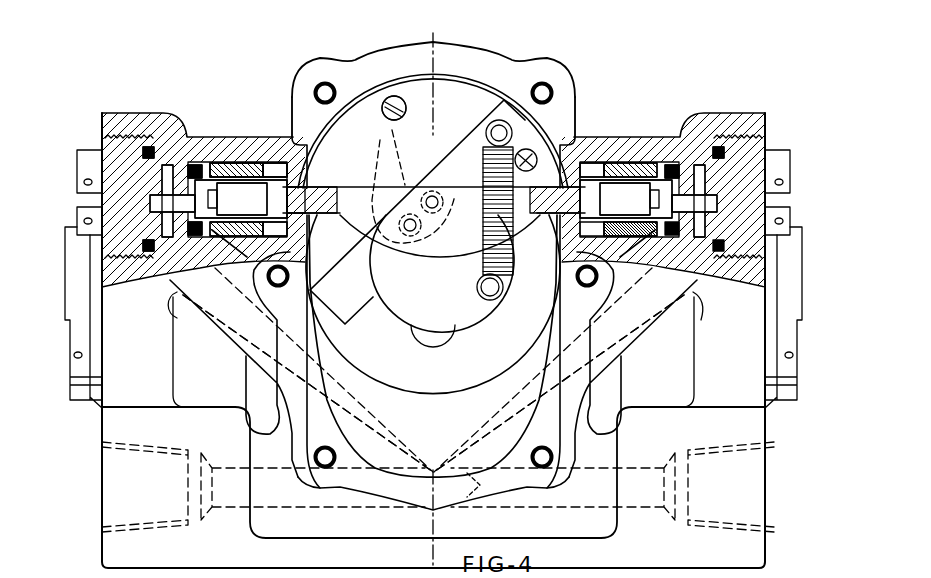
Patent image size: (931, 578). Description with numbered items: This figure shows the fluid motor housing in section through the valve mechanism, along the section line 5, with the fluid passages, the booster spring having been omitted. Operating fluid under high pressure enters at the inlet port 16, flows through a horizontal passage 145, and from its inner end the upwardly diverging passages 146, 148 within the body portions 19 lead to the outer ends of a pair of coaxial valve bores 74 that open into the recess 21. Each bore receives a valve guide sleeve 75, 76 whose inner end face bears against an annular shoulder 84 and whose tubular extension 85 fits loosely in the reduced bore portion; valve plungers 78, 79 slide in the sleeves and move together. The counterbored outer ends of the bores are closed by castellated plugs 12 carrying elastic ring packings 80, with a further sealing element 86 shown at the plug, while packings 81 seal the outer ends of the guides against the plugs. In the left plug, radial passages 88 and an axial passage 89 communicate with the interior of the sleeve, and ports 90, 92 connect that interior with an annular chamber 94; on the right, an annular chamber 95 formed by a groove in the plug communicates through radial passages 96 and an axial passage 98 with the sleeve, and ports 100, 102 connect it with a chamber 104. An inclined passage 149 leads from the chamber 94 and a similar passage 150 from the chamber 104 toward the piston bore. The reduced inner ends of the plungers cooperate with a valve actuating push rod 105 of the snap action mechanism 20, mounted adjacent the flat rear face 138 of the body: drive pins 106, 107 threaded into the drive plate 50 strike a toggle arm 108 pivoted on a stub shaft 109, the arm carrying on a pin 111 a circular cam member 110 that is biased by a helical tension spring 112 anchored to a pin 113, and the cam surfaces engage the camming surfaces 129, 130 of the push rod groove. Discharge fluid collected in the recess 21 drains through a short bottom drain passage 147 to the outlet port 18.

The castellated plug 12 is at (85, 158).
The elastic ring packing 80 is at (148, 147).
The O-ring seal 86 is at (152, 150).
The packing 81 is at (195, 165).
The port 90 is at (215, 170).
The port 92 is at (262, 172).
The annular chamber 94 is at (222, 172).
The valve bore 74 is at (243, 172).
The valve guide sleeve 75 is at (270, 172).
The annular shoulder 84 is at (280, 172).
The valve plunger 78 is at (252, 208).
The valve plunger 79 is at (633, 208).
The radial passage 88 is at (163, 187).
The axial passage 89 is at (152, 200).
The axial passage 98 is at (713, 201).
The annular chamber 95 is at (700, 160).
The radial passage 96 is at (693, 165).
The valve guide sleeve 76 is at (596, 165).
The chamber 104 is at (636, 167).
The flat rear face 138 is at (464, 57).
The drive plate 50 is at (436, 60).
The recess 21 is at (448, 378).
The valve actuating push rod 105 is at (350, 186).
The toggle or cam member 110 is at (436, 297).
The toggle arm 108 is at (350, 303).
The pin 113 is at (488, 128).
The camming surface 129 is at (483, 190).
The drive pin 106 is at (525, 148).
The stub shaft 109 is at (386, 116).
The drive pin 107 is at (392, 96).
The camming surface 130 is at (374, 190).
The pin 111 is at (412, 233).
The helical tension spring 112 is at (482, 232).
The upwardly diverging body portion 19 is at (240, 352).
The port 100 is at (655, 170).
The port 102 is at (609, 165).
The tubular extension 85 is at (313, 66).
The inclined passage 149 is at (163, 300).
The passage 150 is at (675, 322).
The snap action mechanism 20 is at (510, 308).
The inlet port 16 is at (123, 518).
The outlet port 18 is at (743, 523).
The passage 146 is at (372, 402).
The passage 148 is at (470, 432).
The bottom drain passage 147 is at (530, 493).
The horizontal passage 145 is at (290, 507).
The section line 5 is at (425, 38).